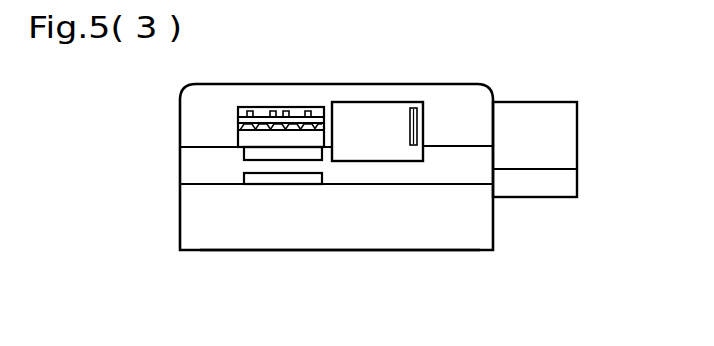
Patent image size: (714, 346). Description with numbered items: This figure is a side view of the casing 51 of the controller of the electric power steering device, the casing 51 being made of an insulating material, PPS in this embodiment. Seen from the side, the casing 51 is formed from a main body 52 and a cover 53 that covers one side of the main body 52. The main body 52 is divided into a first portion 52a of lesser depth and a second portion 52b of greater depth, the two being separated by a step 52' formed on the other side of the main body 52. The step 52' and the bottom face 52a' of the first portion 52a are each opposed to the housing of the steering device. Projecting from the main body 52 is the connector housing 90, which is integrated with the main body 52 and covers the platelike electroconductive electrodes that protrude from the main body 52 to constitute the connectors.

The casing 51 is at (463, 105).
The main body 52 is at (370, 223).
The first portion 52a is at (303, 128).
The bottom face 52a' is at (218, 155).
The step 52' is at (283, 241).
The second portion 52b is at (353, 238).
The cover 53 is at (383, 92).
The connector housing 90 is at (540, 115).